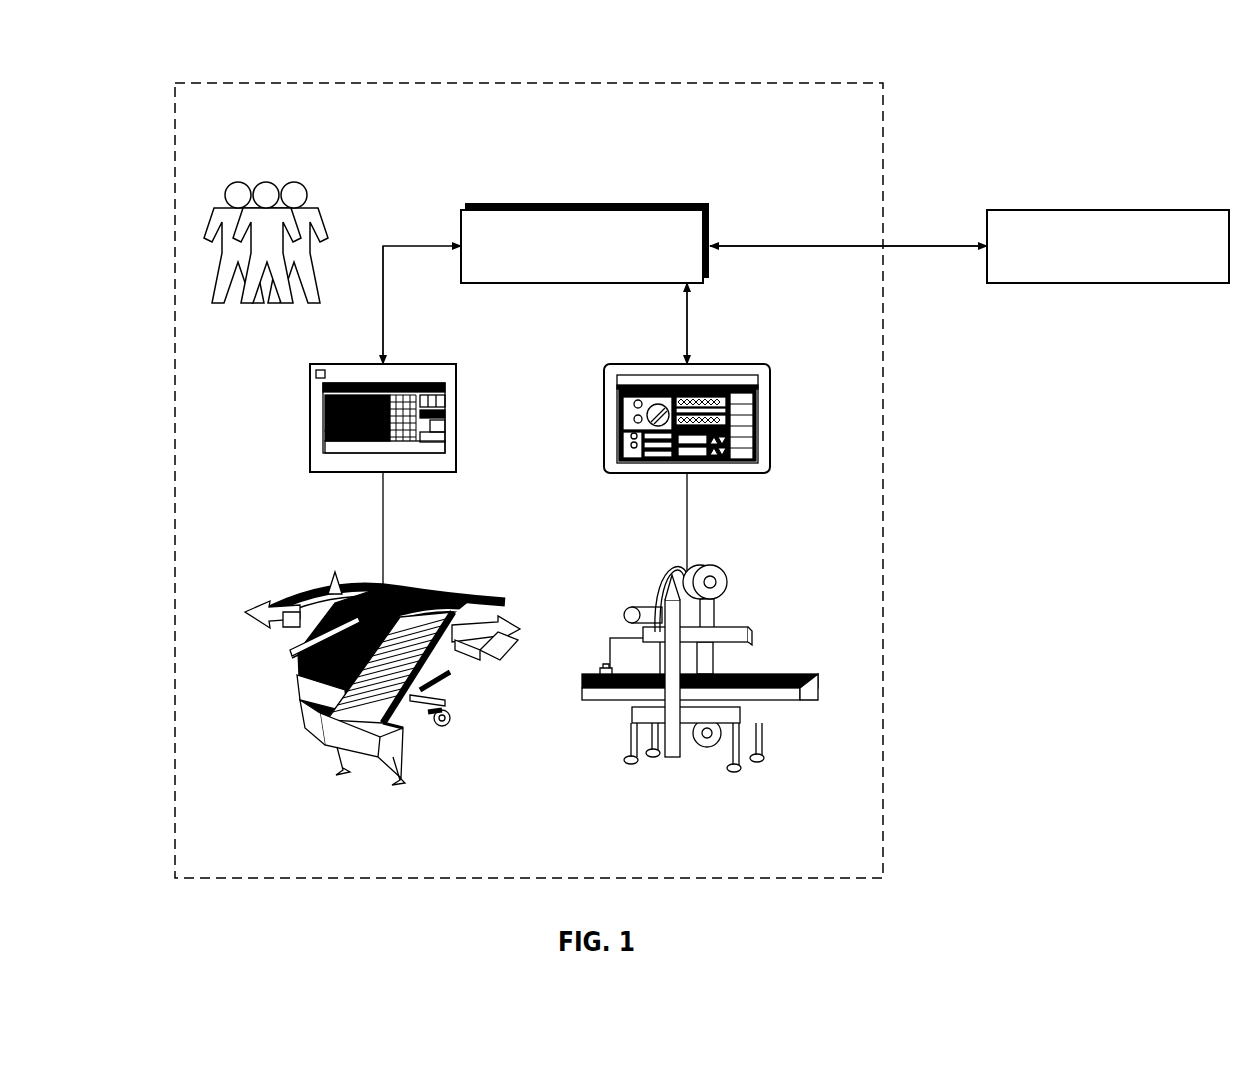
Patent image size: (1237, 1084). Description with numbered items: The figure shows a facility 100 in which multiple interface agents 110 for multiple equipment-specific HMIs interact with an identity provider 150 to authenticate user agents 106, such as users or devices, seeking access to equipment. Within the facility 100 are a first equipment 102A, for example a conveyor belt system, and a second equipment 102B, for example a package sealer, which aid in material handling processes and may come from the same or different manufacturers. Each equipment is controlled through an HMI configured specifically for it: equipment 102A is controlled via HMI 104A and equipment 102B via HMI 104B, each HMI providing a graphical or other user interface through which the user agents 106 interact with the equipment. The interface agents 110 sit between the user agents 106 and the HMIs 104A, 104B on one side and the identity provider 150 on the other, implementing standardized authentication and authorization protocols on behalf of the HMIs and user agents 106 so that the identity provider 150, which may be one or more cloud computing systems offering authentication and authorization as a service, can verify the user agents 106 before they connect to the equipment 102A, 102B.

The facility 100 is at (242, 83).
The first equipment 102A is at (300, 593).
The second equipment 102B is at (708, 563).
The HMI 104A is at (310, 420).
The HMI 104B is at (772, 418).
The user agents 106 is at (320, 219).
The interface agents 110 is at (588, 204).
The identity provider 150 is at (1162, 210).